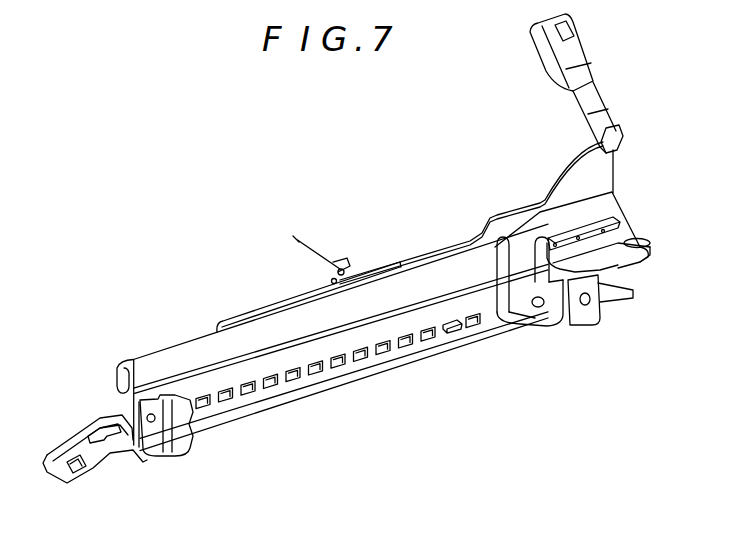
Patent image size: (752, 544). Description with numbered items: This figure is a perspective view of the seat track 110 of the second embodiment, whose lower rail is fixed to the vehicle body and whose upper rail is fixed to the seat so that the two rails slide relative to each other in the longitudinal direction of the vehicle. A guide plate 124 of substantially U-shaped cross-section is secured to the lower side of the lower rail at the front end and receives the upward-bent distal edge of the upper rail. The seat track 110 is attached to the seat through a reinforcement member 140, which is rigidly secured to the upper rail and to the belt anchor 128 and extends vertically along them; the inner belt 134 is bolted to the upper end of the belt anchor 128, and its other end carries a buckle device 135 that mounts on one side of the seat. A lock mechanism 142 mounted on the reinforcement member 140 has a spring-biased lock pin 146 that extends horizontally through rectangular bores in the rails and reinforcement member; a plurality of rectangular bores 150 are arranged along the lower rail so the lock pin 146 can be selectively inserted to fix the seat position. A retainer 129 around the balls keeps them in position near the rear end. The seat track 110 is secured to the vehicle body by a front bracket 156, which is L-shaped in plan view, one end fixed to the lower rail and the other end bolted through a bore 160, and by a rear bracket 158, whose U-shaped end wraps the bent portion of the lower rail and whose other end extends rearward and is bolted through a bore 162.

The seat track 110 is at (240, 138).
The guide plate 124 is at (140, 440).
The belt anchor 128 is at (609, 173).
The retainer 129 is at (622, 222).
The inner belt 134 is at (594, 100).
The seat belt buckle 135 is at (580, 50).
The reinforcement member 140 is at (535, 205).
The lock mechanism 142 is at (370, 266).
The lock pin 146 is at (453, 335).
The rectangular bores 150 is at (272, 388).
The bracket 156 is at (131, 462).
The bracket 158 is at (550, 316).
The bore 160 is at (83, 478).
The bore 162 is at (588, 306).